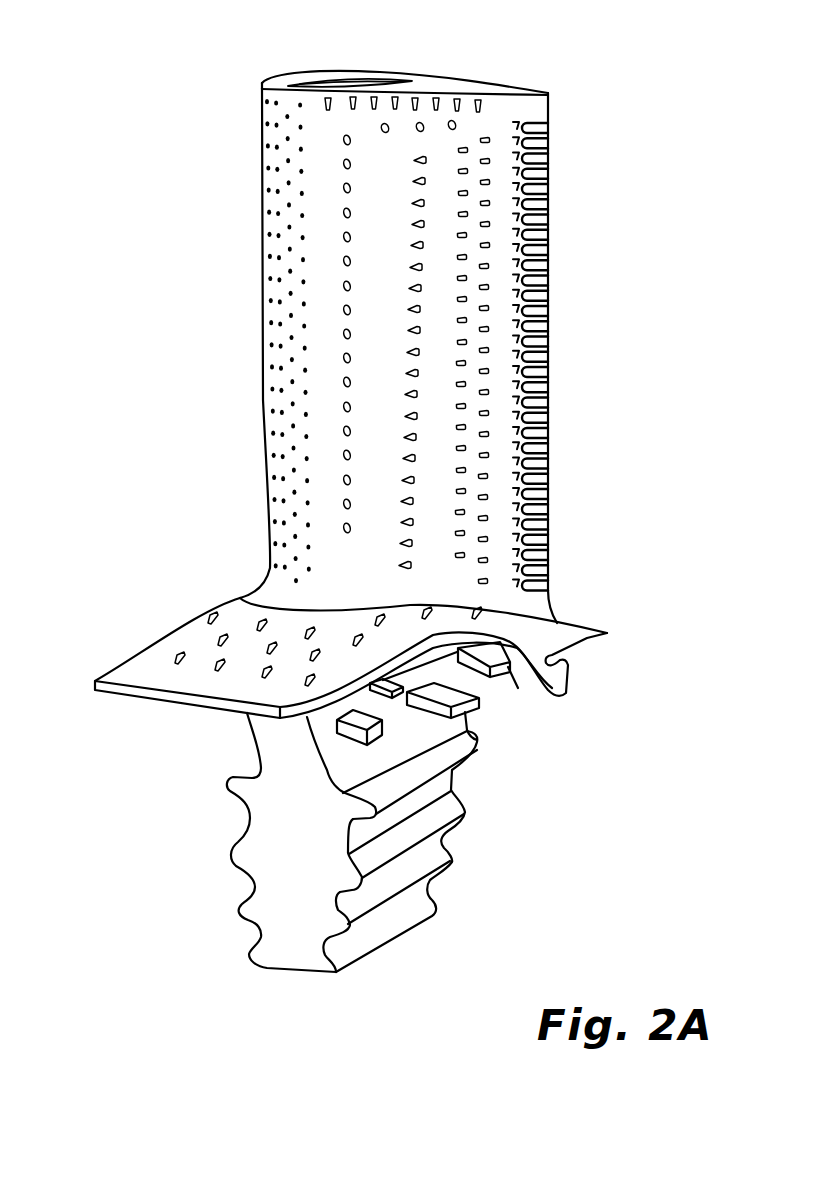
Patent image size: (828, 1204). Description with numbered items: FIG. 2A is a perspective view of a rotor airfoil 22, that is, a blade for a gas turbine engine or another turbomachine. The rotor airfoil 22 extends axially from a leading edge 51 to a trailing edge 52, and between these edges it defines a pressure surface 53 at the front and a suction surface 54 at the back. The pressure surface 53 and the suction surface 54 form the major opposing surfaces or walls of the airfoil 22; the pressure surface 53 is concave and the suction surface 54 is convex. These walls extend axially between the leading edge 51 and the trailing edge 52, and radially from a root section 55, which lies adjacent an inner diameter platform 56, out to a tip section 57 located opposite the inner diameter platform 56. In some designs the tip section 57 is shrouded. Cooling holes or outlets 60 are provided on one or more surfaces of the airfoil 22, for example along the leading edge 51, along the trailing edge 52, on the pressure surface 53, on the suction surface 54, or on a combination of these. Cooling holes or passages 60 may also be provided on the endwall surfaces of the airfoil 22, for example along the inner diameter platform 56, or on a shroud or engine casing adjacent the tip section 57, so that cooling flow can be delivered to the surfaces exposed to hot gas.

The rotor airfoil 22 is at (141, 83).
The leading edge 51 is at (259, 245).
The trailing edge 52 is at (550, 360).
The pressure surface 53 is at (363, 374).
The suction surface 54 is at (501, 74).
The root section 55 is at (290, 598).
The inner diameter platform 56 is at (165, 636).
The tip section 57 is at (436, 90).
The cooling holes 60 is at (422, 202).